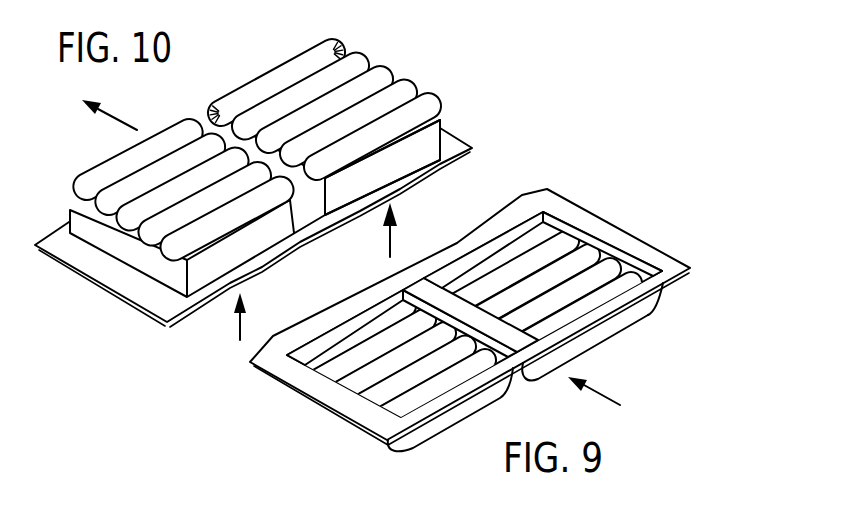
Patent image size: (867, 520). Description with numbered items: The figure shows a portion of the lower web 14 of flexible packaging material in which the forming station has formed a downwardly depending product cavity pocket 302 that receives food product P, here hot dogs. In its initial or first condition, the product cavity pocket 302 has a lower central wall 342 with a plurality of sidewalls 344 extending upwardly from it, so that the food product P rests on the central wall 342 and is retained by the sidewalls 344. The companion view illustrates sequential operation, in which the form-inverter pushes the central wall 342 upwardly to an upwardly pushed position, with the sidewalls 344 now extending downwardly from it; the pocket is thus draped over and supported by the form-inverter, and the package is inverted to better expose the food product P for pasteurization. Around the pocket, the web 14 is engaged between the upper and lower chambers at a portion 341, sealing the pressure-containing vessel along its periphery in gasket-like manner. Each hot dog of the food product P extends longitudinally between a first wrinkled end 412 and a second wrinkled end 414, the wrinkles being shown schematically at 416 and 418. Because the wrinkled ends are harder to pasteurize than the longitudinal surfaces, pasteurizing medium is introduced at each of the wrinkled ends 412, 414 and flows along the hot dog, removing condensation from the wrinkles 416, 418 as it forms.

In FIG. 10, the lower web 14 is at (456, 148).
In FIG. 9, the lower web 14 is at (668, 261).
In FIG. 10, the portion 341 is at (101, 284).
In FIG. 10, the lower central wall 342 is at (438, 116).
In FIG. 9, the lower central wall 342 is at (605, 341).
In FIG. 10, the sidewalls 344 is at (436, 138).
In FIG. 9, the sidewalls 344 is at (645, 304).
In FIG. 10, the first wrinkled end 412 is at (241, 63).
In FIG. 10, the second wrinkled end 414 is at (340, 43).
In FIG. 10, the wrinkles 416 is at (216, 103).
In FIG. 10, the wrinkles 418 is at (328, 45).
In FIG. 9, the product cavity pocket 302 is at (488, 306).
In FIG. 10, the food product P is at (399, 84).
In FIG. 9, the food product P is at (569, 243).